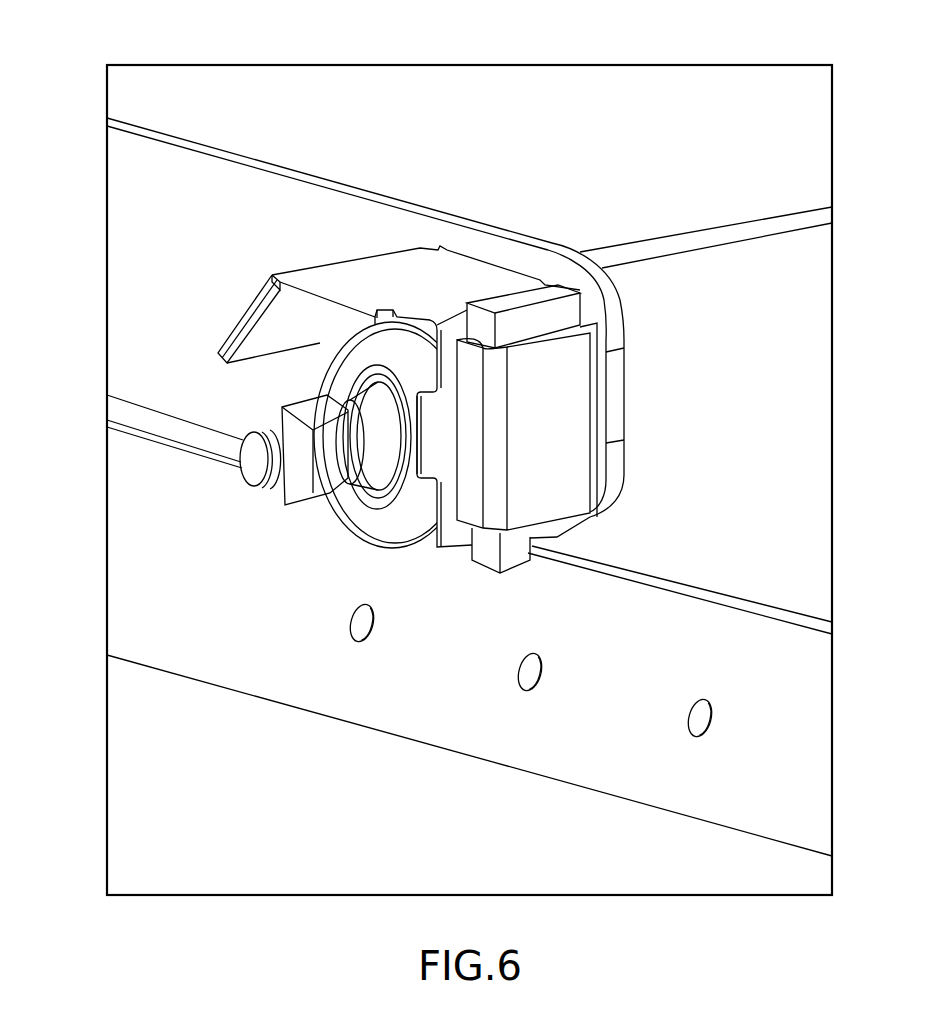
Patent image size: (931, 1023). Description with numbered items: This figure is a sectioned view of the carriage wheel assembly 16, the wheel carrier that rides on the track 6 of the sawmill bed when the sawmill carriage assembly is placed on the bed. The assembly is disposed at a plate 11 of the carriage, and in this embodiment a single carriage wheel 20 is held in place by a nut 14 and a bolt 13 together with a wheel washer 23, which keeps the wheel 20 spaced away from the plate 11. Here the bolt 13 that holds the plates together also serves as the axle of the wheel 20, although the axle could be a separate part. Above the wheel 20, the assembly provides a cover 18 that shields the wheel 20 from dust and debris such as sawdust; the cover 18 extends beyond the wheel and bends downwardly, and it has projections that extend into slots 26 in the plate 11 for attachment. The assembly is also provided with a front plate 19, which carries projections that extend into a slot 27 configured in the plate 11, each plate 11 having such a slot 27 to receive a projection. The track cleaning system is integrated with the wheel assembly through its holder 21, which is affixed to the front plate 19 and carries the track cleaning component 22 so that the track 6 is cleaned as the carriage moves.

The track 6 is at (724, 633).
The plate 11 is at (510, 233).
The bolt 13 is at (252, 473).
The nut 14 is at (317, 473).
The carriage wheel assembly 16 is at (453, 323).
The cover 18 is at (405, 275).
The front plate 19 is at (443, 452).
The carriage wheel 20 is at (422, 762).
The holder 21 is at (572, 410).
The track cleaning component 22 is at (562, 317).
The wheel washer 23 is at (387, 463).
The slot 26 is at (316, 301).
The slot 27 is at (418, 407).